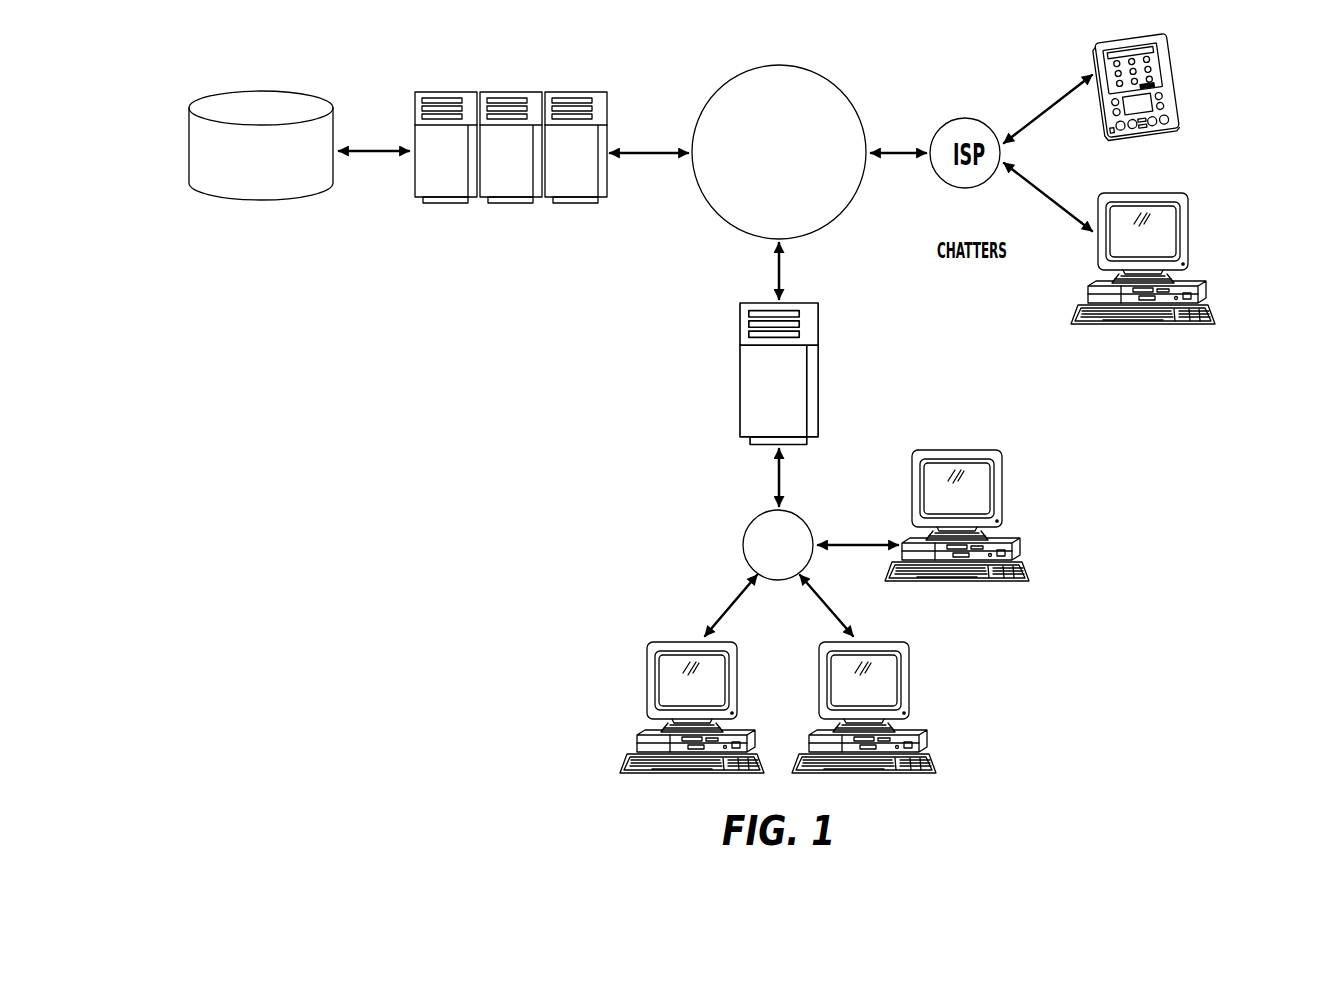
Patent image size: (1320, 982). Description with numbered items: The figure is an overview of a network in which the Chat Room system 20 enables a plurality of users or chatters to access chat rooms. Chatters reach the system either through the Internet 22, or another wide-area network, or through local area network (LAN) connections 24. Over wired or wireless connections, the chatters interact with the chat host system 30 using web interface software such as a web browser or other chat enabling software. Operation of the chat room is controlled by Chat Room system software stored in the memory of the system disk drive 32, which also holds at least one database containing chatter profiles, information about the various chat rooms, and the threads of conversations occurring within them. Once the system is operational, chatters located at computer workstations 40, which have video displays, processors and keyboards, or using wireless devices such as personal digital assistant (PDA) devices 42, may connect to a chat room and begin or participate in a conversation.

The Chat Room system 20 is at (482, 438).
The Internet 22 is at (722, 221).
The local area network (LAN) connections 24 is at (746, 528).
The chat host system 30 is at (513, 201).
The system disk drive 32 is at (262, 200).
The computer workstations 40 is at (1148, 327).
The personal digital assistant (PDA) devices 42 is at (1172, 79).